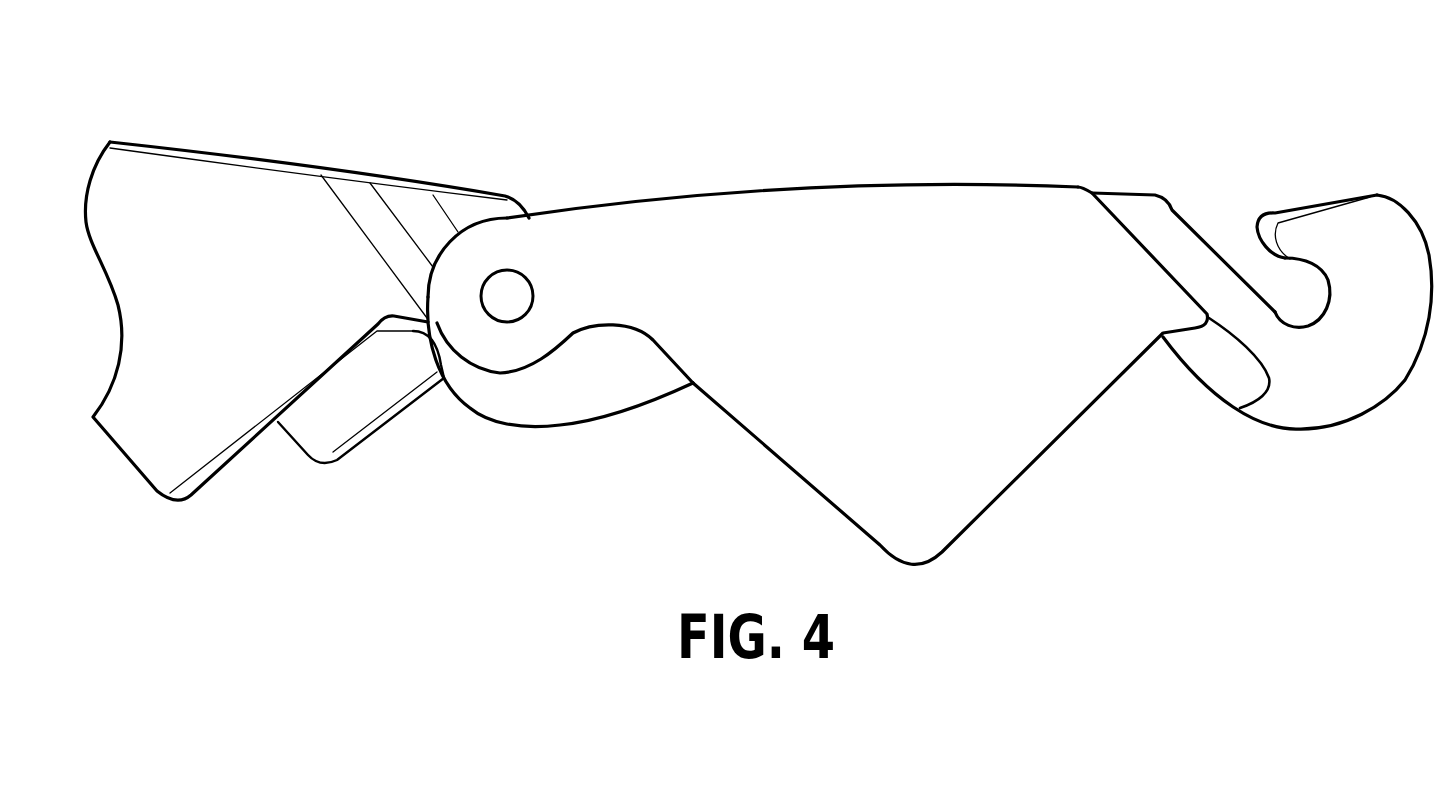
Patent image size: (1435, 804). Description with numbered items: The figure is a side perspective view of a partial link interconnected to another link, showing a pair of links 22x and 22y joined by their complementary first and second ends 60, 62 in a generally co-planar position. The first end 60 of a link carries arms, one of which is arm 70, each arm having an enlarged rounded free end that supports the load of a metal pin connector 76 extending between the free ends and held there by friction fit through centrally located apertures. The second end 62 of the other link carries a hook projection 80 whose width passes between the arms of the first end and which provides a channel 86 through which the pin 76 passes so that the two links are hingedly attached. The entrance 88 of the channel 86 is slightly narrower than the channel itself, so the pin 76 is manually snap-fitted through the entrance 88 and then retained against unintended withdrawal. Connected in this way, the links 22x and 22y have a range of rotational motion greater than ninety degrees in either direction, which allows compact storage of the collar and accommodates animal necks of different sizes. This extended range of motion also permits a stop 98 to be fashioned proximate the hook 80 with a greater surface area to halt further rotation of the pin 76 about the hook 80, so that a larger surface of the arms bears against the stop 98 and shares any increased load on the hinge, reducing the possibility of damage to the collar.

The link 22x is at (234, 153).
The link 22y is at (927, 184).
The first end 60 is at (570, 190).
The second end 62 is at (481, 434).
The arm 70 is at (657, 195).
The pin connector 76 is at (512, 303).
The hook projection 80 is at (612, 372).
The channel 86 is at (1314, 300).
The entrance 88 is at (1256, 222).
The stop 98 is at (385, 238).